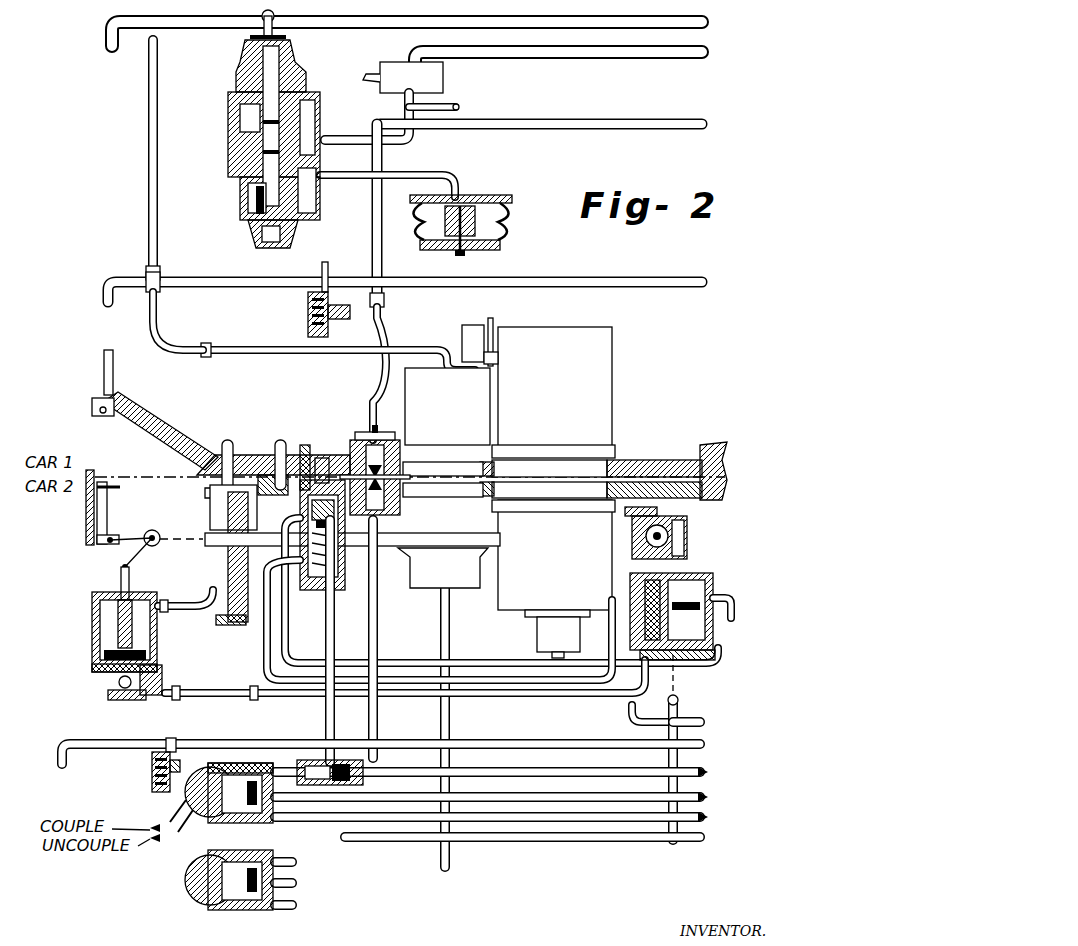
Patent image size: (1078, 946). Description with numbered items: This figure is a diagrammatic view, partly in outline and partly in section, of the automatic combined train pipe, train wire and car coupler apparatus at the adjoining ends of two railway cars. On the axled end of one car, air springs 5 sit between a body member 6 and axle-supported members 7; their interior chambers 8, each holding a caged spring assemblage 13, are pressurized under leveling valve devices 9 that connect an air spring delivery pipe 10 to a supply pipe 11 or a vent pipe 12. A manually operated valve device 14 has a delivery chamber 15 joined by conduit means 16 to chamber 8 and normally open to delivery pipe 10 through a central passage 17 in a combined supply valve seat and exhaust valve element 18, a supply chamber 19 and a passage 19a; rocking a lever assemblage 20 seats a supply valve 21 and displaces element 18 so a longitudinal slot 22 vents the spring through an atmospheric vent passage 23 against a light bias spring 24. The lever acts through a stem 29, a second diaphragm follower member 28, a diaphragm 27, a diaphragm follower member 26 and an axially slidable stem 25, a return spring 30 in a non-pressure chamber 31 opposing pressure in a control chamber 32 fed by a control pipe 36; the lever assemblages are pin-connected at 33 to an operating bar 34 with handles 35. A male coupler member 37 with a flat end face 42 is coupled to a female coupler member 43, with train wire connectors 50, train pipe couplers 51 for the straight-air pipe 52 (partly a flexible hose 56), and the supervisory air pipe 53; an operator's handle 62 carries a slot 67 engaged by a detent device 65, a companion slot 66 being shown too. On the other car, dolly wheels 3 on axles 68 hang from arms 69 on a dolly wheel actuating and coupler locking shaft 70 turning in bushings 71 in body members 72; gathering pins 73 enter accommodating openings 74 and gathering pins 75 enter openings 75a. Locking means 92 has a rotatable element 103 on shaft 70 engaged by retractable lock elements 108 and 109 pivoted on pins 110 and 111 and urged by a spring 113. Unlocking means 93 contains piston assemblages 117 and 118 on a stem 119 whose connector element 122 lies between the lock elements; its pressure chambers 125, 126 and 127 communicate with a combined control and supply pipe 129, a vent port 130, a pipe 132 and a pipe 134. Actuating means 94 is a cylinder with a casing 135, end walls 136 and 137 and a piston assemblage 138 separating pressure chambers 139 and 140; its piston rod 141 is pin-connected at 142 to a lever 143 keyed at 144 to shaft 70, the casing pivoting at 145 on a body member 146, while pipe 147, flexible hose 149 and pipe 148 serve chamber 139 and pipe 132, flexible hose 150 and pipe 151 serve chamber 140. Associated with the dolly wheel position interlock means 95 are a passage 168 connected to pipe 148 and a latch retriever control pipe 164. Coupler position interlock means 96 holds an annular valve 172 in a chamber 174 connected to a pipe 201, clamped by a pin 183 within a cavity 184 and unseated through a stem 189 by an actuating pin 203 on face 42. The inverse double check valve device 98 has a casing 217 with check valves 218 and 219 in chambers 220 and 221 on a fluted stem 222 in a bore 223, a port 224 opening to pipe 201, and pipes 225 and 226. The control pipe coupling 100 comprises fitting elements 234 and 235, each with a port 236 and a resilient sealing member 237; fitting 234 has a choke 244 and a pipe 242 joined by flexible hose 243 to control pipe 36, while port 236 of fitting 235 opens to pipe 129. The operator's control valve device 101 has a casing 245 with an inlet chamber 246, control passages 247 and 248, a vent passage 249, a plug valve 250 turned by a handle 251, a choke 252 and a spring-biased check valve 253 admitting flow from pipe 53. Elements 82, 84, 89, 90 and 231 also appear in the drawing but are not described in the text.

The dolly wheels 3 is at (84, 506).
The air springs 5 is at (512, 231).
The body member 6 is at (491, 199).
The axle-supported members 7 is at (475, 251).
The interior chambers 8 is at (426, 219).
The leveling valve devices 9 is at (443, 78).
The air spring delivery pipe 10 is at (418, 142).
The supply pipe 11 is at (600, 58).
The vent pipe 12 is at (366, 77).
The caged spring assemblage 13 is at (430, 233).
The manually operated valve devices 14 is at (230, 132).
The delivery chamber 15 is at (253, 234).
The conduit means 16 is at (456, 172).
The central passage 17 is at (250, 209).
The combined supply valve seat and exhaust valve element 18 is at (248, 226).
The supply chamber 19 is at (245, 176).
The passage 19a is at (316, 166).
The lever assemblage 20 is at (290, 48).
The supply valve 21 is at (245, 193).
The longitudinal slot 22 is at (318, 221).
The atmospheric vent passage 23 is at (312, 184).
The bias spring 24 is at (287, 234).
The axially slidable stem 25 is at (240, 162).
The diaphragm follower member 26 is at (238, 102).
The diaphragm 27 is at (308, 109).
The second diaphragm follower member 28 is at (306, 94).
The stem 29 is at (285, 65).
The return spring 30 is at (240, 136).
The non-pressure chamber 31 is at (240, 118).
The control chamber 32 is at (238, 92).
The pin connection 33 is at (273, 18).
The operating bar 34 is at (492, 25).
The handles 35 is at (106, 36).
The control pipe 36 is at (601, 129).
The male coupler member 37 is at (642, 458).
The flat end face 42 is at (706, 470).
The female coupler member 43 is at (600, 502).
The train wire connectors 50 is at (604, 336).
The train pipe couplers 51 is at (412, 380).
The straight-air pipe 52 is at (148, 124).
The supervisory air pipe 53 is at (708, 798).
The flexible hose 56 is at (168, 341).
The operator's handle 62 is at (218, 281).
The detent devices 65 is at (300, 317).
The slot 66 is at (328, 275).
The slot 67 is at (252, 283).
The axles 68 is at (108, 488).
The arms 69 is at (108, 517).
The dolly wheel actuating and coupler locking shaft 70 is at (152, 535).
The bushings 71 is at (226, 568).
The body members 72 is at (228, 626).
The gathering pins 73 is at (222, 444).
The accommodating openings 74 is at (236, 442).
The gathering pins 75 is at (280, 441).
The accommodating openings 75a is at (303, 446).
The valve 82 is at (144, 776).
The pipe 84 is at (704, 745).
The fitting 89 is at (167, 733).
The pipe 90 is at (112, 743).
The locking means 92 is at (698, 529).
The unlocking means 93 is at (722, 636).
The actuating means 94 is at (88, 619).
The dolly wheel position interlock means 95 is at (624, 593).
The coupler position interlock means 96 is at (294, 582).
The inverse double check valve device 98 is at (334, 754).
The control pipe coupling 100 is at (398, 440).
The operator's control valve device 101 is at (210, 764).
The rotatable element 103 is at (688, 549).
The retractable lock element 108 is at (657, 512).
The retractable lock element 109 is at (688, 563).
The pin 110 is at (630, 529).
The pin 111 is at (630, 561).
The spring 113 is at (630, 541).
The piston assemblage 117 is at (706, 601).
The piston assemblage 118 is at (636, 652).
The stem 119 is at (702, 576).
The connector element 122 is at (688, 531).
The pressure chamber 125 is at (716, 647).
The pressure chamber 126 is at (716, 622).
The third pressure chamber 127 is at (706, 586).
The combined control and supply pipe 129 is at (378, 618).
The vent port 130 is at (735, 605).
The pipe 132 is at (280, 663).
The pipe 134 is at (288, 620).
The hollow cylindrical casing 135 is at (150, 639).
The end wall 136 is at (132, 592).
The end wall 137 is at (92, 669).
The piston assemblage 138 is at (150, 657).
The pressure chamber 139 is at (158, 674).
The pressure chamber 140 is at (121, 584).
The piston rod 141 is at (100, 633).
The pin connection 142 is at (122, 567).
The lever 143 is at (138, 552).
The key 144 is at (160, 541).
The pivotal connection 145 is at (108, 692).
The body member 146 is at (130, 697).
The pipe 147 is at (153, 699).
The pipe 148 is at (566, 698).
The flexible hose 149 is at (200, 698).
The flexible hose 150 is at (215, 604).
The section of pipe 151 is at (165, 606).
The latch retriever control pipe 164 is at (630, 721).
The passage 168 is at (650, 655).
The annular valve 172 is at (338, 573).
The chamber 174 is at (337, 586).
The pin 183 is at (338, 556).
The hollow cylindrical cavity 184 is at (704, 723).
The stem 189 is at (356, 506).
The pipe 201 is at (336, 618).
The actuating pin 203 is at (335, 456).
The casing 217 is at (352, 790).
The check valve 218 is at (364, 770).
The check valve 219 is at (308, 758).
The chamber 220 is at (388, 790).
The chamber 221 is at (287, 753).
The fluted stem 222 is at (380, 752).
The bore 223 is at (329, 788).
The port 224 is at (314, 758).
The pipe 225 is at (708, 773).
The pipe 226 is at (265, 760).
The pipe 231 is at (708, 818).
The fitting element 234 is at (375, 426).
The fitting element 235 is at (405, 510).
The port 236 is at (398, 436).
The sealing member 237 is at (412, 469).
The pipe 242 is at (378, 422).
The flexible hose 243 is at (381, 370).
The choke 244 is at (372, 437).
The casing 245 is at (215, 766).
The inlet chamber 246 is at (265, 824).
The control passage 247 is at (236, 762).
The control passage 248 is at (240, 824).
The vent passage 249 is at (188, 793).
The plug valve 250 is at (188, 803).
The handle 251 is at (192, 818).
The choke 252 is at (248, 753).
The spring-biased check valve 253 is at (288, 808).